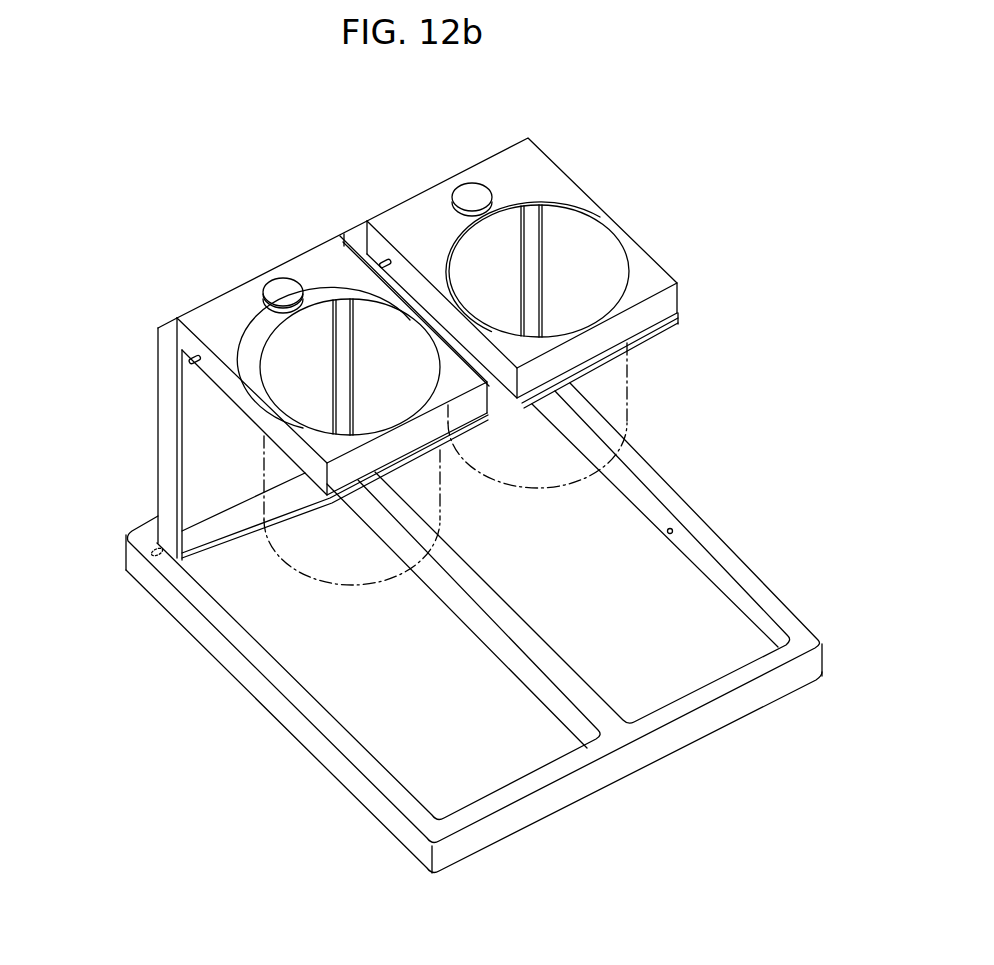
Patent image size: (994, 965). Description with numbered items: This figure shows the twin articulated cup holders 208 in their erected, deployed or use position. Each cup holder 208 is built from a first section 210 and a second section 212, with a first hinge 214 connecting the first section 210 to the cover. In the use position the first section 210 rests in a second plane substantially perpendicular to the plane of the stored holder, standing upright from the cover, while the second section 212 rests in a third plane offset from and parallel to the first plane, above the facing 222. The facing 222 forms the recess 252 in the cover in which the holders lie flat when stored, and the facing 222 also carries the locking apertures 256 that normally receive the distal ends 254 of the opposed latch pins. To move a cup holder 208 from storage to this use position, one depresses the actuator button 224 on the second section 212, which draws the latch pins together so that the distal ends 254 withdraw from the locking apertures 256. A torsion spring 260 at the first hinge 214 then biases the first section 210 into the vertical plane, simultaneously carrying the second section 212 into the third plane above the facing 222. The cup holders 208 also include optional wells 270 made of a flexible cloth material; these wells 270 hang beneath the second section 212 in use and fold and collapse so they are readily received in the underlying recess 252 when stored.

The articulated cup holder 208 is at (623, 237).
The first section 210 is at (165, 451).
The second section 212 is at (571, 188).
The first hinge 214 is at (152, 556).
The facing 222 is at (731, 563).
The actuator button 224 is at (473, 196).
The recess 252 is at (640, 688).
The distal ends 254 is at (356, 240).
The locking apertures 256 is at (667, 532).
The torsion spring 260 is at (161, 556).
The wells 270 is at (627, 392).